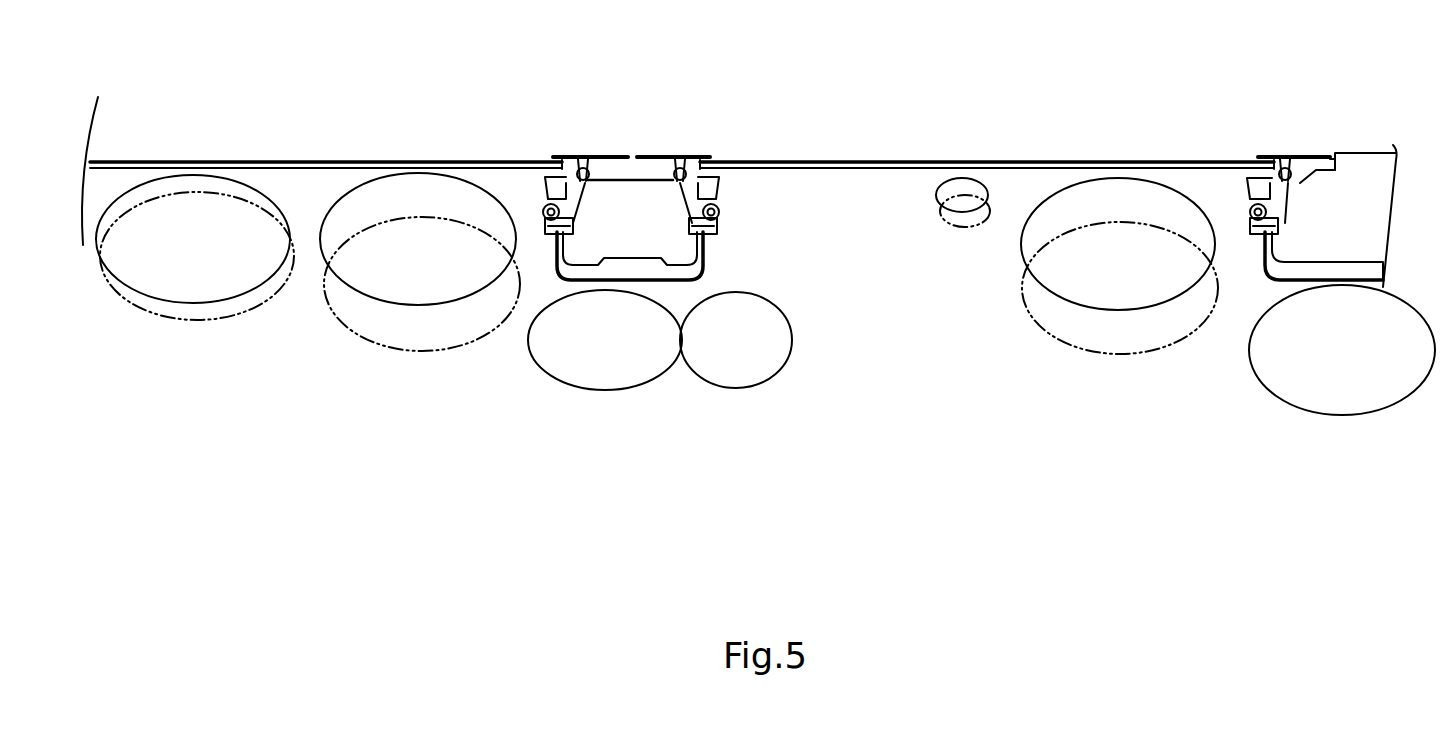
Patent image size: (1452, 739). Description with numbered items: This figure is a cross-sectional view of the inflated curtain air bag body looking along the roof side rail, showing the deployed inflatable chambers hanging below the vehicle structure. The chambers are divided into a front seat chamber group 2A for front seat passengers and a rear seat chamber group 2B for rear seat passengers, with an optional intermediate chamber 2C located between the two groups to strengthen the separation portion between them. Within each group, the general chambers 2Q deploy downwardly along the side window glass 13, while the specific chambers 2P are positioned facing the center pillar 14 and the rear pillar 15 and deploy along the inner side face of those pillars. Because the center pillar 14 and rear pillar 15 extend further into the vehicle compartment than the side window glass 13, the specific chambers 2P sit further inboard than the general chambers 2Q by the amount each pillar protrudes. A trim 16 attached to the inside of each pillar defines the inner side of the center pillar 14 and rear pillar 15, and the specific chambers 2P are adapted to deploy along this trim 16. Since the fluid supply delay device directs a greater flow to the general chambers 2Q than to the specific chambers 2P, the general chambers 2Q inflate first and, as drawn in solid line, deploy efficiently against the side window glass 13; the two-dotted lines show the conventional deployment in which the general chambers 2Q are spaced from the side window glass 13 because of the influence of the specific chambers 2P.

The side window glass 13 is at (300, 160).
The center pillar 14 is at (657, 178).
The rear pillar 15 is at (1372, 150).
The trim 16 is at (673, 291).
The general chambers 2Q is at (162, 303).
The specific chambers 2P is at (608, 390).
The intermediate chamber 2C is at (950, 225).
The front seat chamber group 2A is at (793, 505).
The rear seat chamber group 2B is at (1420, 505).